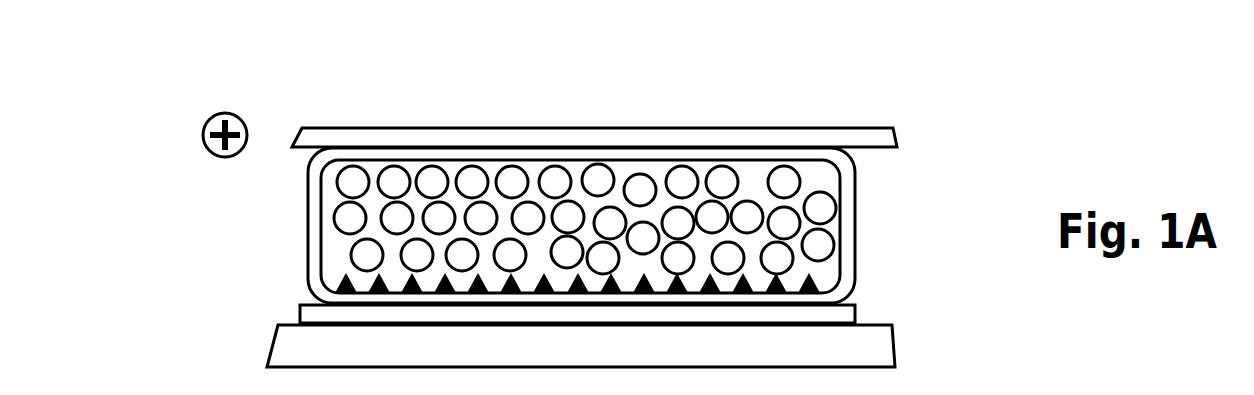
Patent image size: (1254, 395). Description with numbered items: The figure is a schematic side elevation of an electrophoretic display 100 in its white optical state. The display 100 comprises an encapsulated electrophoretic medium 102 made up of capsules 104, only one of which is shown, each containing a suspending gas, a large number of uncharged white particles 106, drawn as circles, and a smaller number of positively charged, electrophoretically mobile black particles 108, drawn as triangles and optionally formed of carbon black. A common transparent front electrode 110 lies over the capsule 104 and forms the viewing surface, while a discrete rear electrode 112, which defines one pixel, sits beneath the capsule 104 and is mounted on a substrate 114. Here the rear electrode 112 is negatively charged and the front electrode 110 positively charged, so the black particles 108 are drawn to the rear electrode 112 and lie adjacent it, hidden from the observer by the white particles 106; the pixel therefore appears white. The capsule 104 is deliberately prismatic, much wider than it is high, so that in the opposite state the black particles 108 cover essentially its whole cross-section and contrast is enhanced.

The electrophoretic display 100 is at (348, 72).
The encapsulated electrophoretic medium 102 is at (869, 190).
The capsule 104 is at (855, 242).
The uncharged particles 106 is at (754, 200).
The particles 108 is at (545, 275).
The front electrode 110 is at (632, 128).
The rear electrode 112 is at (855, 308).
The substrate 114 is at (895, 337).